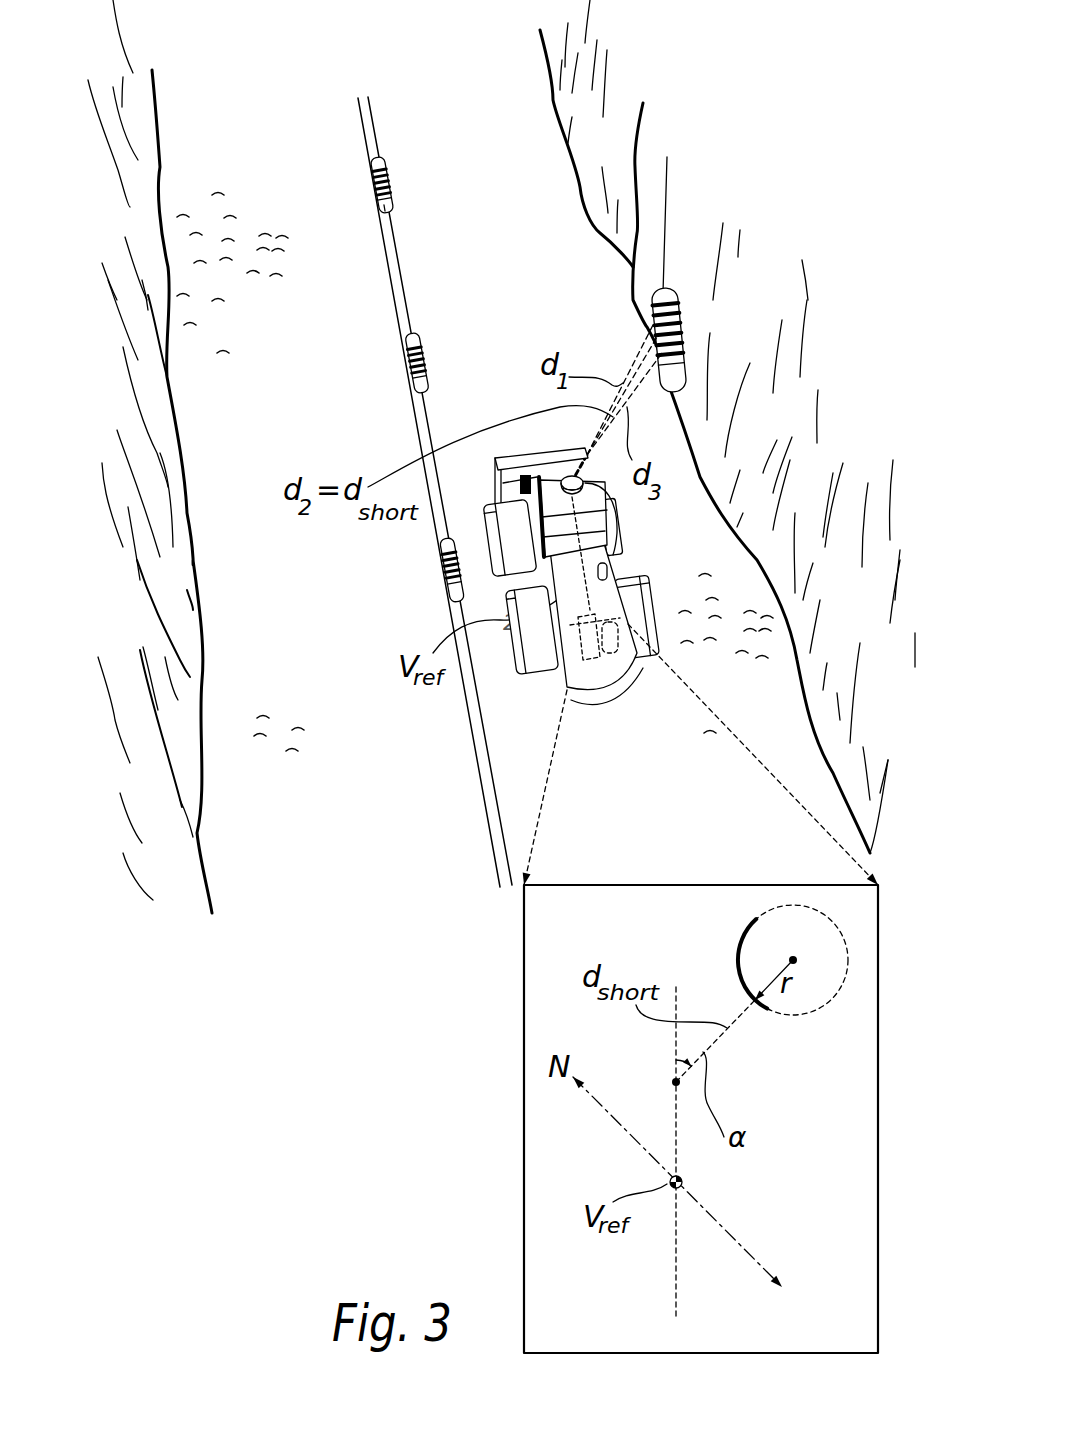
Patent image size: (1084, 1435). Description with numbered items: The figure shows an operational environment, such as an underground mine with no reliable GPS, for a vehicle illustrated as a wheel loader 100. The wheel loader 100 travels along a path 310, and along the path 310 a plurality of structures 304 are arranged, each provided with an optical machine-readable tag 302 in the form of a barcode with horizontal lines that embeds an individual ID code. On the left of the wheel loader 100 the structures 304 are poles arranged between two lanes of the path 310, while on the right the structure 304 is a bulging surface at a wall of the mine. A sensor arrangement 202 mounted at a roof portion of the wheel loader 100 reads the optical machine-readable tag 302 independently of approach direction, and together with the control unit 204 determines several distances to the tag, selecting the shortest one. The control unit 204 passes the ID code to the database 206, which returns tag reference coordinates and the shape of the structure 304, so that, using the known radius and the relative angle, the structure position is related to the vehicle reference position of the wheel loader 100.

The wheel loader 100 is at (613, 612).
The sensor arrangement 202 is at (590, 490).
The control unit 204 is at (587, 657).
The database 206 is at (613, 652).
The optical machine-readable tag 302 is at (393, 178).
The structure 304 is at (385, 205).
The path 310 is at (423, 105).